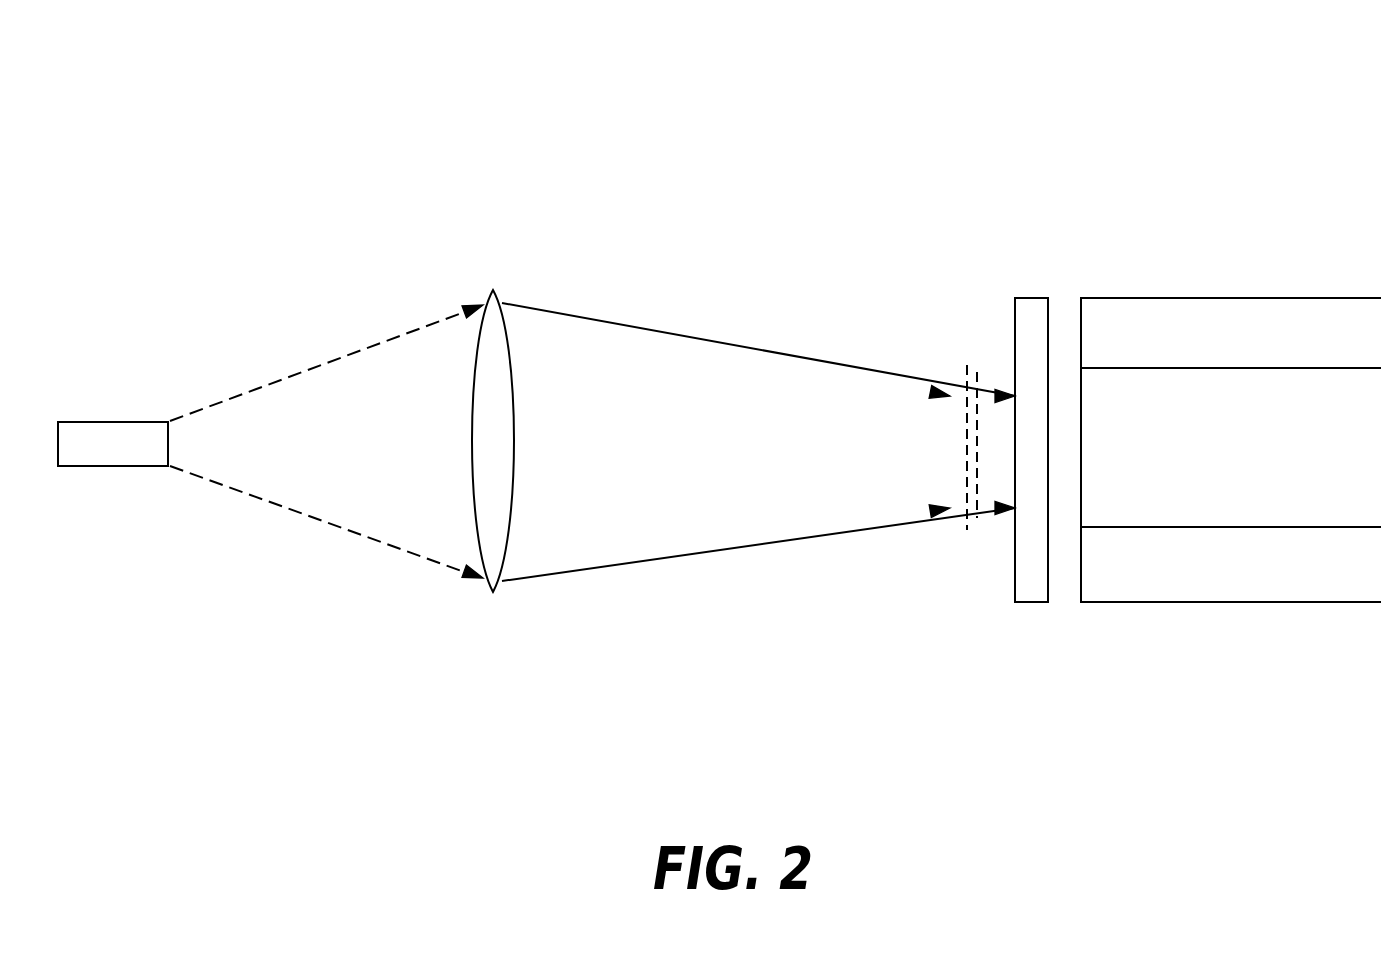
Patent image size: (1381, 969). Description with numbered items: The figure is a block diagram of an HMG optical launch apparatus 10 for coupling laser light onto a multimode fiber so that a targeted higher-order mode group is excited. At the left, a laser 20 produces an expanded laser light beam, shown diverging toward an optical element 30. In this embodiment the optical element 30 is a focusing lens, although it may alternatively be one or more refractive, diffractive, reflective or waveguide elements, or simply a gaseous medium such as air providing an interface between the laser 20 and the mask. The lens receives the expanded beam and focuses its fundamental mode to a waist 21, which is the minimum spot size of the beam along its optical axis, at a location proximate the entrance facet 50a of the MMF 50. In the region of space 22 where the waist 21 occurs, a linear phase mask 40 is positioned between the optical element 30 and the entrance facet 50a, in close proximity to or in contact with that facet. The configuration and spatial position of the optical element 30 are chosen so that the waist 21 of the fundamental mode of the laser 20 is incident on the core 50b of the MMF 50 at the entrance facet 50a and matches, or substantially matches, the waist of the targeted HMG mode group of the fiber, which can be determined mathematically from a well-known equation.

The HMG optical launch apparatus 10 is at (1076, 105).
The laser 20 is at (76, 422).
The waist 21 is at (969, 368).
The region of space 22 is at (948, 255).
The optical element 30 is at (495, 290).
The linear phase mask 40 is at (1028, 298).
The MMF 50 is at (1185, 298).
The entrance facet 50a is at (1073, 330).
The core 50b is at (1081, 492).